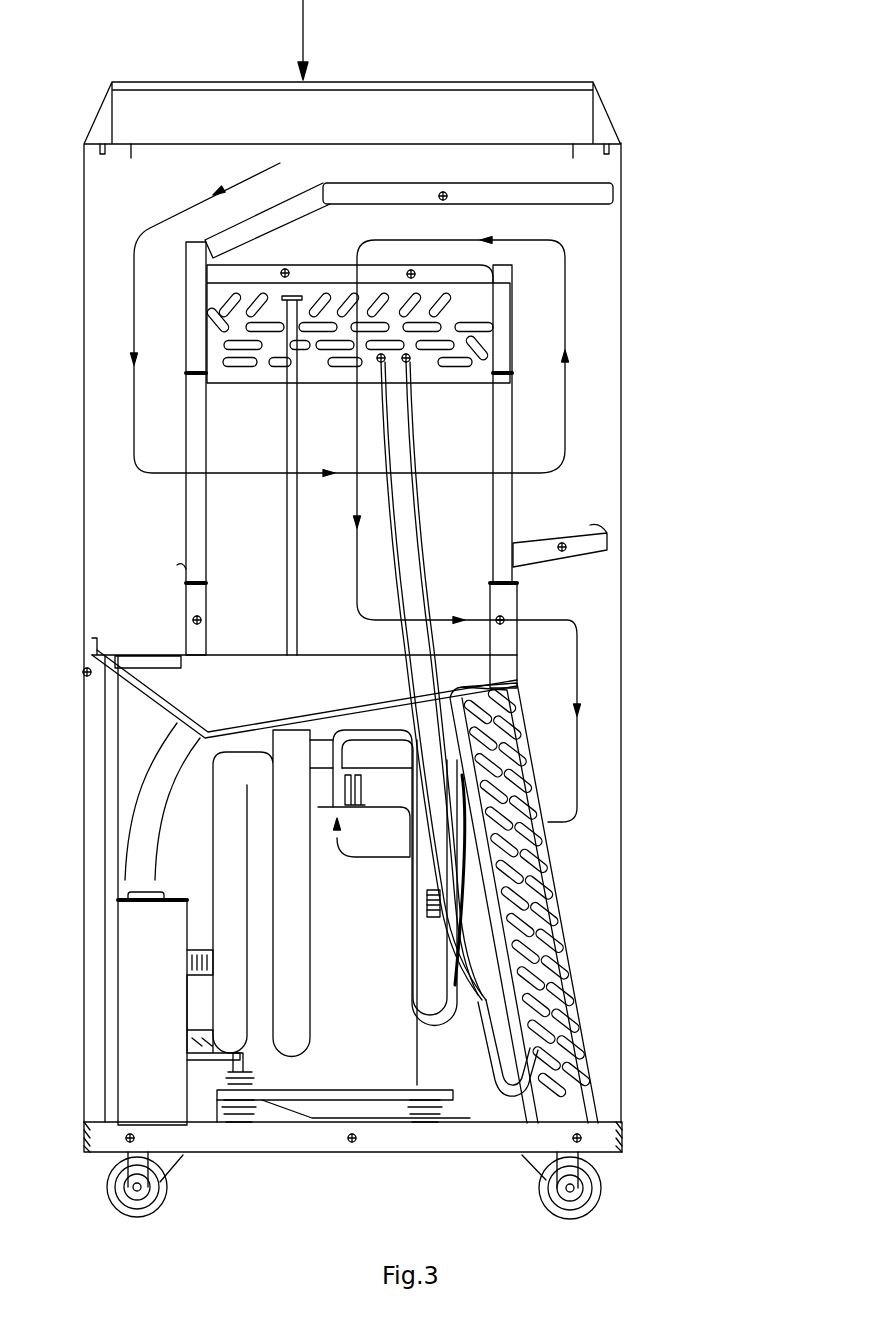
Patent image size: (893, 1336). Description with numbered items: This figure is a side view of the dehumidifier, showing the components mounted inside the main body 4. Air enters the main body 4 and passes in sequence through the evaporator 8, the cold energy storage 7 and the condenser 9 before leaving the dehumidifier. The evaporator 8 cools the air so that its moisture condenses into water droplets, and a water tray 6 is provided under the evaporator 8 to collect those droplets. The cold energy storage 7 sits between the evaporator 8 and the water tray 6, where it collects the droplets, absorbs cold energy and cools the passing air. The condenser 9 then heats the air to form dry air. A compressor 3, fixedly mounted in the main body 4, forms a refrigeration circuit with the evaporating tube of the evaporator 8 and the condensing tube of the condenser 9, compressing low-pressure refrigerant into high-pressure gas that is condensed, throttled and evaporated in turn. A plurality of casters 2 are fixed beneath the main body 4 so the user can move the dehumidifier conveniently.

The casters 2 is at (602, 1187).
The compressor 3 is at (375, 905).
The main body 4 is at (600, 430).
The water tray 6 is at (462, 673).
The cold energy storage 7 is at (465, 522).
The evaporator 8 is at (490, 330).
The condenser 9 is at (545, 925).